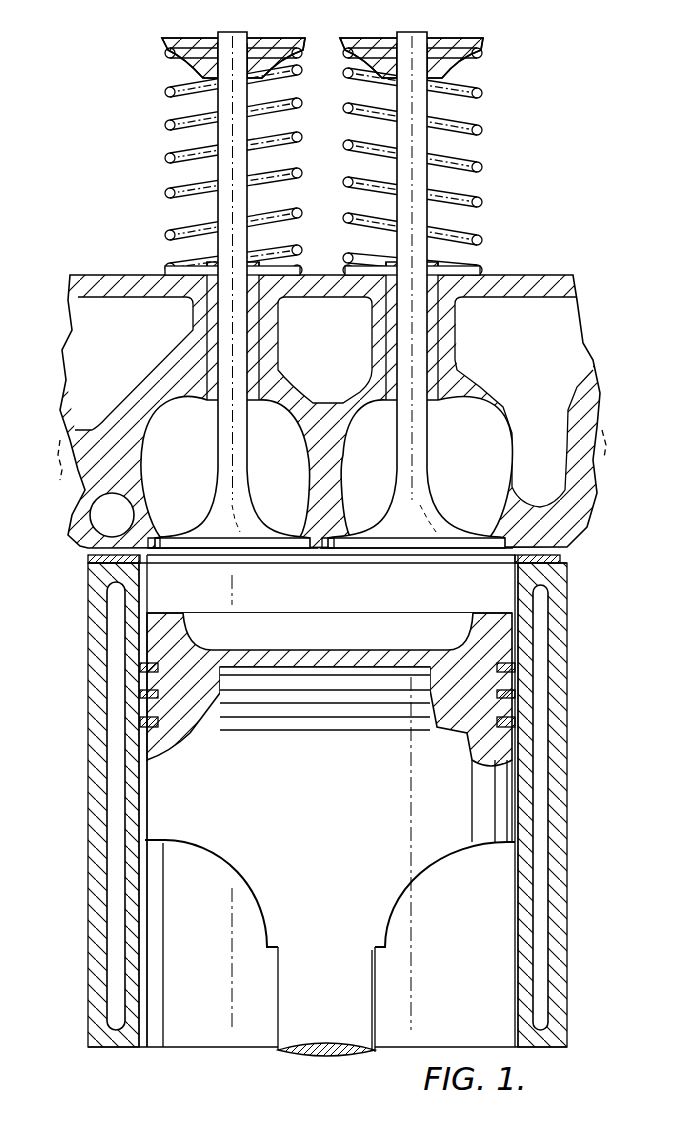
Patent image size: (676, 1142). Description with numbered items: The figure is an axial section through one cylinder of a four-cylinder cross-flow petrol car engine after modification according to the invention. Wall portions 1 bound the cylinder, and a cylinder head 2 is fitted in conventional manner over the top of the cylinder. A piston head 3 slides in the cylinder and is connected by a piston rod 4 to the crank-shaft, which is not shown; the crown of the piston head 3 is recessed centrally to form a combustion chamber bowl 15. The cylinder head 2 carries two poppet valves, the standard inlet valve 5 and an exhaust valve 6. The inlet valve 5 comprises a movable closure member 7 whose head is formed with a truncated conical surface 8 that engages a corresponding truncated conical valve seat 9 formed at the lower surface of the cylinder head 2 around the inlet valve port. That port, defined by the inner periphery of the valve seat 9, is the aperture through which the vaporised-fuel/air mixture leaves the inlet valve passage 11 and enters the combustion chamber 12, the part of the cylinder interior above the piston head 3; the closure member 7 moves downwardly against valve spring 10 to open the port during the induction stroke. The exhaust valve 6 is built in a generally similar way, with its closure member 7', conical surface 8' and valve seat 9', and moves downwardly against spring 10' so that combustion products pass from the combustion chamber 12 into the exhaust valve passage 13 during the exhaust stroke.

The wall portions 1 is at (132, 940).
The cylinder head 2 is at (326, 287).
The piston head 3 is at (268, 893).
The piston rod 4 is at (367, 973).
The inlet valve 5 is at (237, 557).
The exhaust valve 6 is at (410, 603).
The movable closure member 7 is at (232, 290).
The movable closure member 7' is at (416, 290).
The truncated conical surface 8 is at (233, 569).
The truncated conical surface 8' is at (416, 570).
The truncated conical valve seat 9 is at (162, 510).
The truncated conical valve seat 9' is at (347, 511).
The valve spring 10 is at (207, 156).
The valve spring 10' is at (451, 156).
The inlet valve passage 11 is at (166, 449).
The combustion chamber 12 is at (306, 601).
The exhaust valve passage 13 is at (355, 449).
The combustion chamber bowl 15 is at (445, 630).